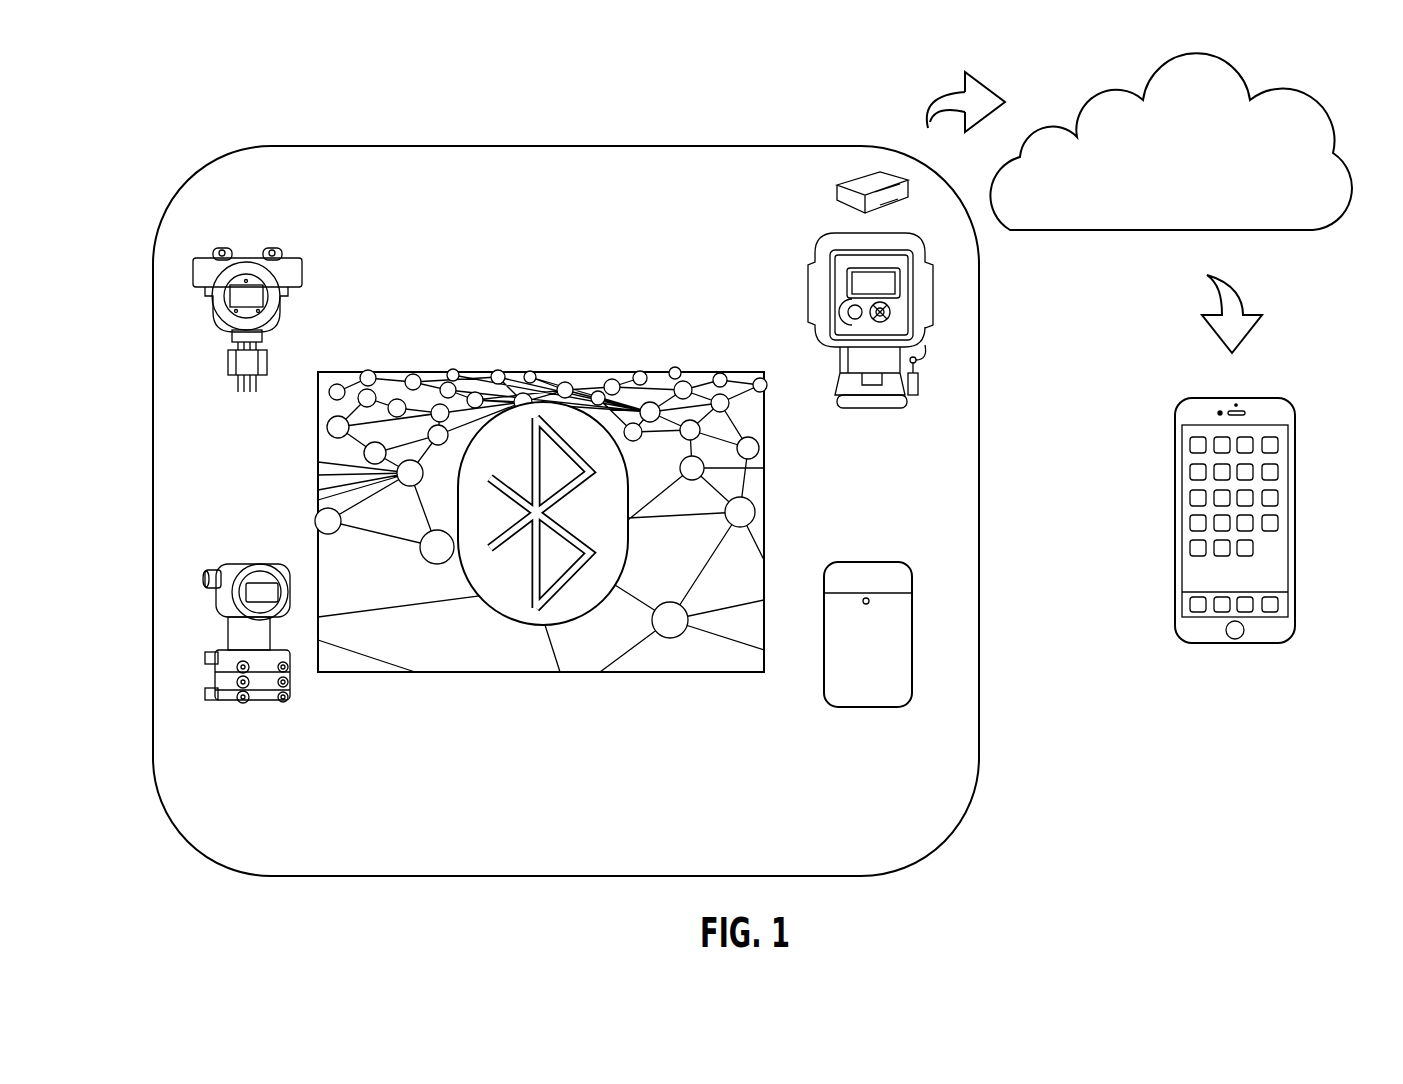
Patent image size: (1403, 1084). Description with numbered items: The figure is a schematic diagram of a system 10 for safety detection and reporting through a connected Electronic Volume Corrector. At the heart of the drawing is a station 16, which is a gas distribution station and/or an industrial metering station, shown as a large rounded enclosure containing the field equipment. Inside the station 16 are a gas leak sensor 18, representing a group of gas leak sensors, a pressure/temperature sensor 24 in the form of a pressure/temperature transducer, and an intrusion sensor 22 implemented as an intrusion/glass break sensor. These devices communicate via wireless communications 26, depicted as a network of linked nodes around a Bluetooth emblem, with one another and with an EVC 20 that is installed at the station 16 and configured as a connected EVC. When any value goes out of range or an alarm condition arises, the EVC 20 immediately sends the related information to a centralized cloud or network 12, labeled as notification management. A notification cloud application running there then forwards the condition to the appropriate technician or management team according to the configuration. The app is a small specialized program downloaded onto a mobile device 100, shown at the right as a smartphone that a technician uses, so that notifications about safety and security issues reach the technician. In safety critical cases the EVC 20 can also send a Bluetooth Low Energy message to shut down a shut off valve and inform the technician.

The system 10 is at (197, 93).
The network 12 is at (1150, 163).
The station 16 is at (337, 146).
The gas leak sensor 18 is at (249, 252).
The EVC 20 is at (935, 330).
The intrusion sensor 22 is at (877, 556).
The pressure/temperature sensor 24 is at (246, 566).
The wireless communications 26 is at (590, 677).
The mobile device 100 is at (1270, 388).